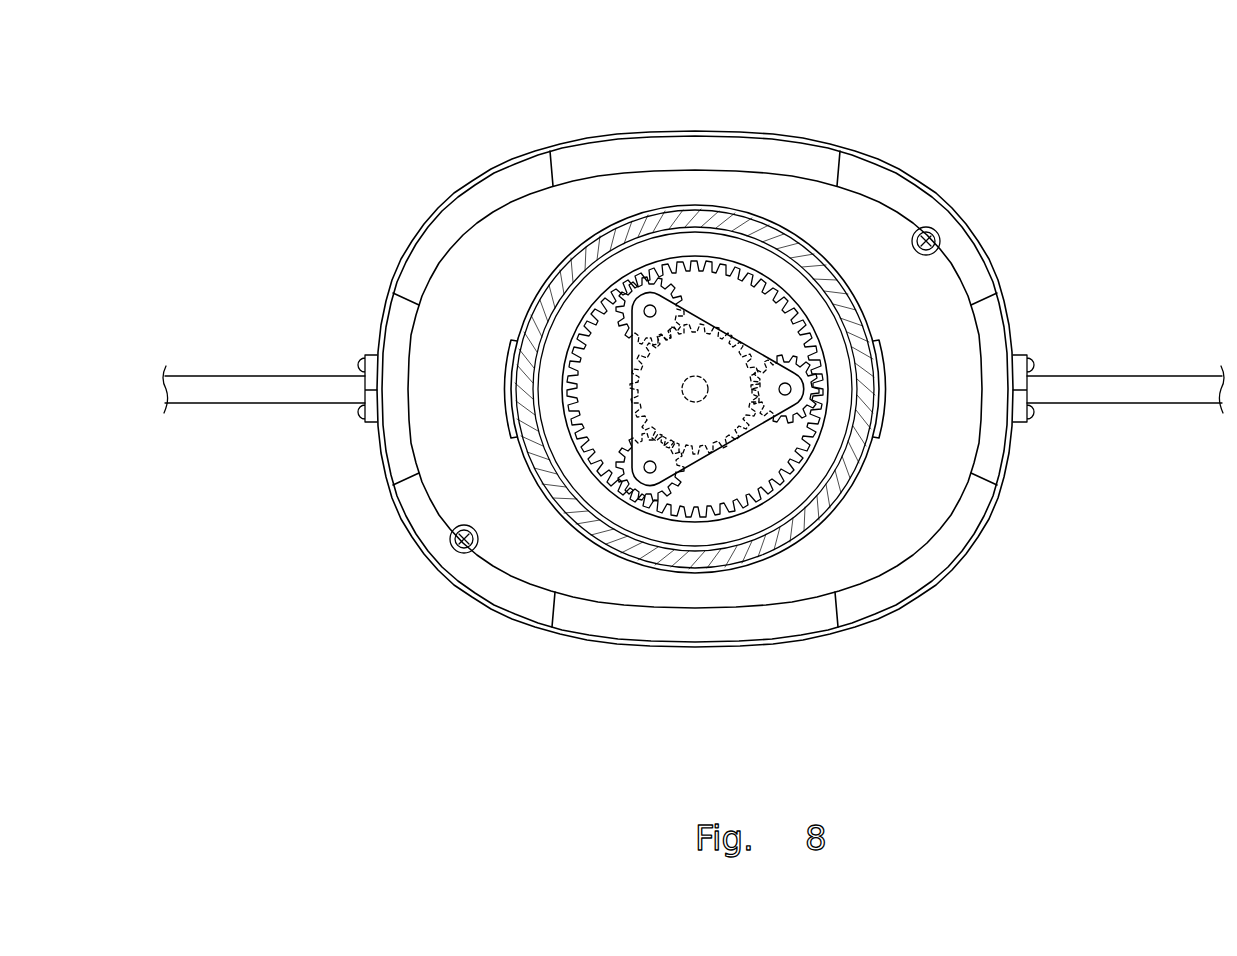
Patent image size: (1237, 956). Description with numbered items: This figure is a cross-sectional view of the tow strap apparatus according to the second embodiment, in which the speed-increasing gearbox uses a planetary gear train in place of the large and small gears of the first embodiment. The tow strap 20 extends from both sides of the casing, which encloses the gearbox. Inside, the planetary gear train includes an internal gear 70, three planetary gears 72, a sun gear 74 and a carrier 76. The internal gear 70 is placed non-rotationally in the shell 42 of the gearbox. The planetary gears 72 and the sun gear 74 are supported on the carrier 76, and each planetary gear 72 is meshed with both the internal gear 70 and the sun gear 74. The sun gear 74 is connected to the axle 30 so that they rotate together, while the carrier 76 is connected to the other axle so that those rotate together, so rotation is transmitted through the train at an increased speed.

The tow strap 20 is at (1154, 392).
The axle 30 is at (695, 399).
The shell 42 is at (847, 308).
The internal gear 70 is at (735, 250).
The planetary gears 72 is at (658, 287).
The sun gear 74 is at (648, 383).
The carrier 76 is at (760, 437).